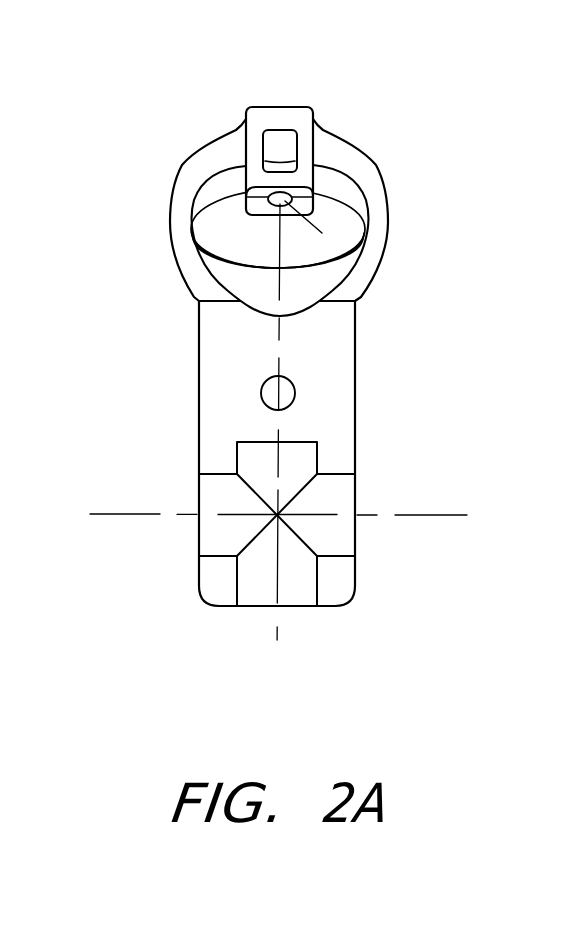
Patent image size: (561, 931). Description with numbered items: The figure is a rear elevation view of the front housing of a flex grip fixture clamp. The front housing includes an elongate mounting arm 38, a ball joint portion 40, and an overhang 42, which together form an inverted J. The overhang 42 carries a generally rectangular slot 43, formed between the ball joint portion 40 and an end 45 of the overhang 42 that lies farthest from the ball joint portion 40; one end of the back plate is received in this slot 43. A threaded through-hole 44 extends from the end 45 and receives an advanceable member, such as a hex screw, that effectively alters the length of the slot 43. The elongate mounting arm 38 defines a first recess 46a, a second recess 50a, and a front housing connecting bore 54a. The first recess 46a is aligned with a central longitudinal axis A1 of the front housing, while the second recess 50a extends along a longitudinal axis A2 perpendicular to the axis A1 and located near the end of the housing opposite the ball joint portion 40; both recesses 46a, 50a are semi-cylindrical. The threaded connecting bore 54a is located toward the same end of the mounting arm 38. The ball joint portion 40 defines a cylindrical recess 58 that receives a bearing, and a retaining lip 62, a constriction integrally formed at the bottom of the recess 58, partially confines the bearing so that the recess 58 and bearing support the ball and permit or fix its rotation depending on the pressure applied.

The elongate mounting arm 38 is at (198, 453).
The ball joint portion 40 is at (170, 222).
The overhang 42 is at (246, 142).
The slot 43 is at (283, 143).
The threaded through-hole 44 is at (340, 240).
The end of the overhang 45 is at (246, 184).
The first recess 46a is at (260, 587).
The second recess 50a is at (212, 535).
The front housing connecting bore 54a is at (283, 396).
The cylindrical recess 58 is at (355, 255).
The retaining lip 62 is at (361, 230).
The central longitudinal axis A1 is at (277, 627).
The longitudinal axis A2 is at (418, 517).